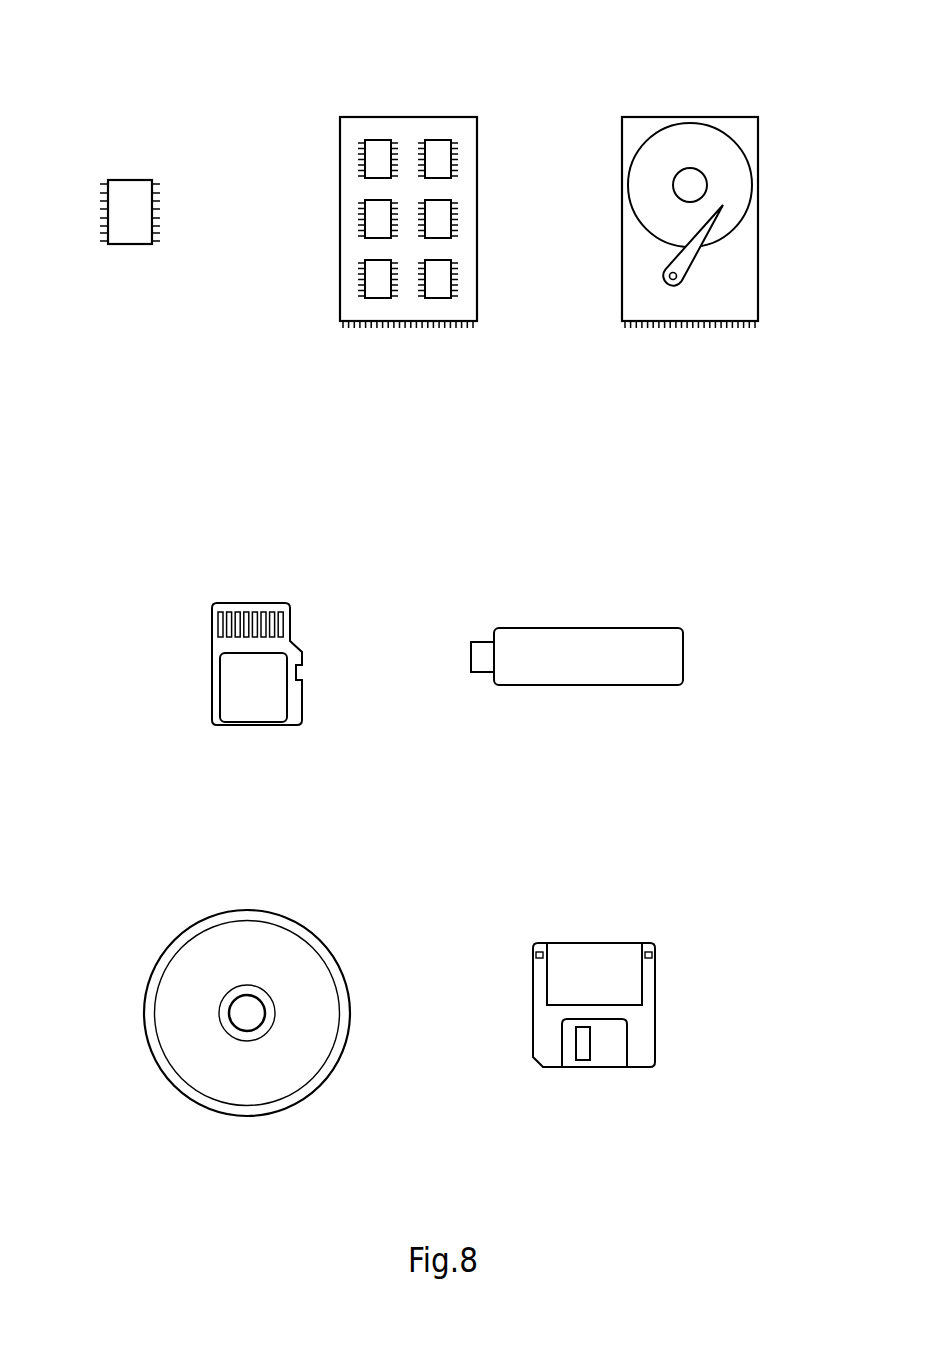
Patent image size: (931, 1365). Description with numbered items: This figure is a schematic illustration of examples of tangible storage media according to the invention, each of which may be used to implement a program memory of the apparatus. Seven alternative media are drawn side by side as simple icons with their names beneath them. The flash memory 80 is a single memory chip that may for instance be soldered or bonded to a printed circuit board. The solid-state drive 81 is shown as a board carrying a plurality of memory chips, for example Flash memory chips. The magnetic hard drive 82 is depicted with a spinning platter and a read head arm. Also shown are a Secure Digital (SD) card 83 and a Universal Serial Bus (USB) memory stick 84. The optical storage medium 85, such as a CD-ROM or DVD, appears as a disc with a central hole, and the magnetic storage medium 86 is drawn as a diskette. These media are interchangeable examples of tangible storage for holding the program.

The flash memory 80 is at (131, 189).
The solid-state drive 81 is at (436, 197).
The magnetic hard drive 82 is at (720, 198).
The Secure Digital (SD) card 83 is at (281, 645).
The Universal Serial Bus (USB) memory stick 84 is at (594, 634).
The optical storage medium 85 is at (266, 1015).
The magnetic storage medium 86 is at (607, 990).